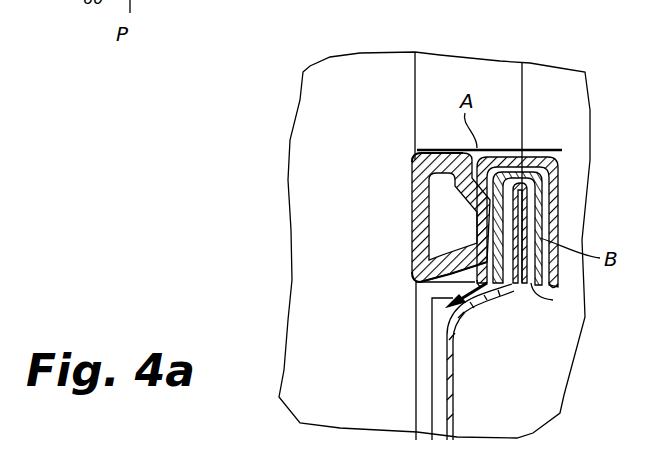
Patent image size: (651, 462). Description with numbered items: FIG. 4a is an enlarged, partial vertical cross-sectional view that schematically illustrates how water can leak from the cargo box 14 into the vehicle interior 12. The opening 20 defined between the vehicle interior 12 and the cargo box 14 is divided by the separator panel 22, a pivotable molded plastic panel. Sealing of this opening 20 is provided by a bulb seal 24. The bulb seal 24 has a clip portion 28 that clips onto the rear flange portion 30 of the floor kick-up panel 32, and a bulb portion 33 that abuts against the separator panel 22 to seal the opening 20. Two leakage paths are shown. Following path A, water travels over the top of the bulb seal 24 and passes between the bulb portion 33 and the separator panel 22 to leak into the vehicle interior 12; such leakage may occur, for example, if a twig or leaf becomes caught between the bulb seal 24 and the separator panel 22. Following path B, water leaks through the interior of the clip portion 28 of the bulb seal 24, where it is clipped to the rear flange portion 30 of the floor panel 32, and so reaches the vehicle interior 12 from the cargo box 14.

The vehicle interior 12 is at (359, 373).
The cargo box 14 is at (561, 114).
The opening 20 is at (409, 278).
The separator panel 22 is at (417, 83).
The bulb seal 24 is at (400, 235).
The clip portion 28 is at (555, 217).
The rear flange portion 30 is at (521, 273).
The floor kick-up panel 32 is at (455, 397).
The bulb portion 33 is at (402, 197).